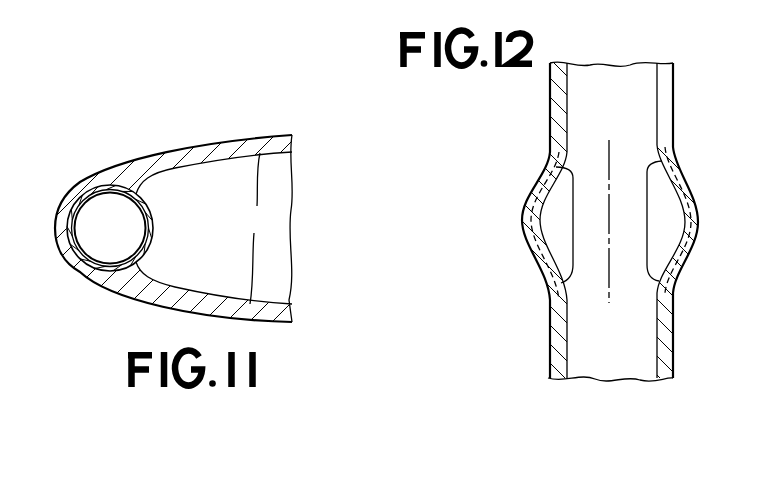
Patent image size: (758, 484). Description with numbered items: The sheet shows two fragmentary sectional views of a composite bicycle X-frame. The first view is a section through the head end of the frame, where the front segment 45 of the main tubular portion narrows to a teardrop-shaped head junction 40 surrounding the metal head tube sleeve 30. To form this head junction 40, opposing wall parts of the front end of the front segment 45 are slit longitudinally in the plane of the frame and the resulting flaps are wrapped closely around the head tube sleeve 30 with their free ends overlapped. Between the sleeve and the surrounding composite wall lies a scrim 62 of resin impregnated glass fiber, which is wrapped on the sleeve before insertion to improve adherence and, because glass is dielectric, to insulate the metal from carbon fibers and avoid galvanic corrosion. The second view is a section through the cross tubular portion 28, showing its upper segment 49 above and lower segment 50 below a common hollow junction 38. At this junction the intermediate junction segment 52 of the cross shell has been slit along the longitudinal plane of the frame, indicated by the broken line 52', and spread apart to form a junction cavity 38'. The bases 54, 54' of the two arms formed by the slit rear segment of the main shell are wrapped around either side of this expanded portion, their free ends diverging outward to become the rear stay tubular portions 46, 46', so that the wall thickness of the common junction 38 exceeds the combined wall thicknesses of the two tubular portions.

In FIG. 12, the cross tubular portion 28 is at (657, 62).
In FIG. 11, the head tube sleeve 30 is at (103, 186).
In FIG. 11, the head junction 40 is at (143, 157).
In FIG. 11, the scrim 62 is at (152, 207).
In FIG. 11, the front segment 45 is at (248, 228).
In FIG. 12, the upper segment 49 is at (583, 98).
In FIG. 12, the lower segment 50 is at (585, 343).
In FIG. 12, the common junction 38 is at (580, 223).
In FIG. 12, the junction cavity 38' is at (669, 212).
In FIG. 12, the junction segment 52 is at (645, 222).
In FIG. 12, the slit 52' is at (628, 303).
In FIG. 12, the rear stay tubular portion 46 is at (708, 216).
In FIG. 12, the rear stay tubular portion 46' is at (501, 180).
In FIG. 12, the base of arm 54 is at (716, 268).
In FIG. 12, the base of arm 54' is at (514, 225).